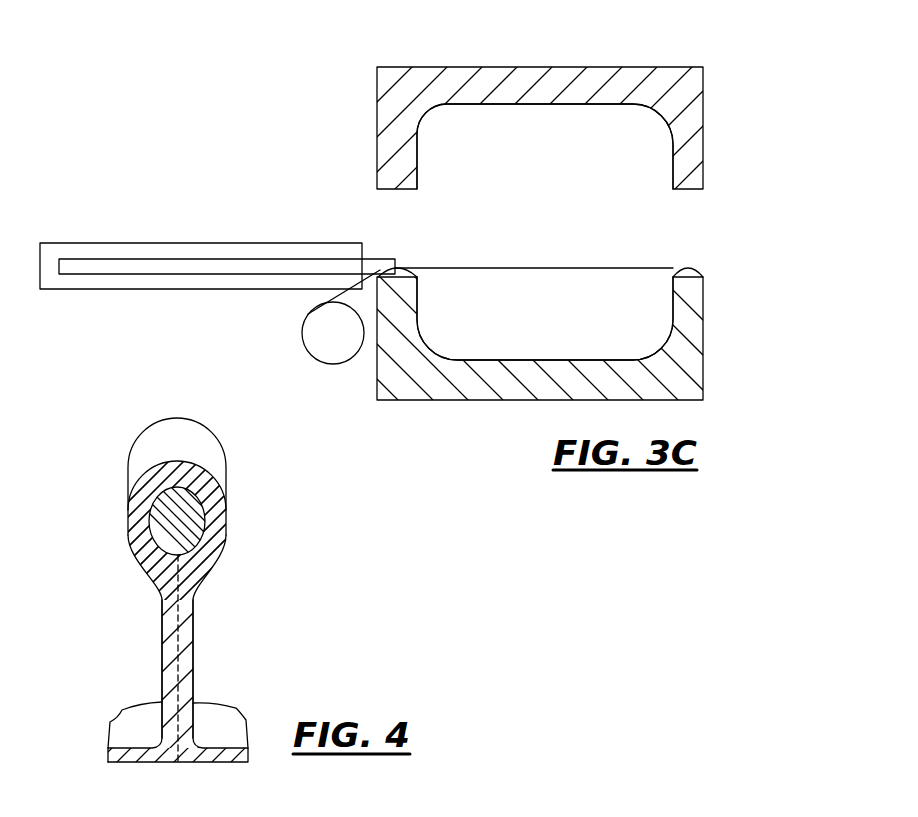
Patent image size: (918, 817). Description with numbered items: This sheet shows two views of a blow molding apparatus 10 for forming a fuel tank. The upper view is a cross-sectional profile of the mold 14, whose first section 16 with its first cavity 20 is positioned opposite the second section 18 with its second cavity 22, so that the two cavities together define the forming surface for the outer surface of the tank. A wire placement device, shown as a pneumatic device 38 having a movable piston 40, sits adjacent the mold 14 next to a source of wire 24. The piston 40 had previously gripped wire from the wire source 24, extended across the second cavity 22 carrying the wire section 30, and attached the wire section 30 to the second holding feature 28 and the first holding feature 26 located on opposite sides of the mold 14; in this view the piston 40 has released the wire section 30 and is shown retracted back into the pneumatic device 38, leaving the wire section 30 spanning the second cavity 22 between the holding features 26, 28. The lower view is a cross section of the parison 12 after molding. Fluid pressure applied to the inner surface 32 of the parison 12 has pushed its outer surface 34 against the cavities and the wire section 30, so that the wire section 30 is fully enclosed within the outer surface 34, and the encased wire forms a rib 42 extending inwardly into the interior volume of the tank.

In FIG. 3C, the blow molding apparatus 10 is at (533, 220).
In FIG. 4, the parison 12 is at (238, 463).
In FIG. 3C, the mold 14 is at (703, 163).
In FIG. 3C, the first section 16 is at (703, 118).
In FIG. 3C, the second section 18 is at (703, 323).
In FIG. 3C, the first cavity 20 is at (560, 116).
In FIG. 3C, the second cavity 22 is at (518, 356).
In FIG. 3C, the source of wire 24 is at (333, 365).
In FIG. 3C, the first holding feature 26 is at (418, 278).
In FIG. 3C, the second holding feature 28 is at (700, 270).
In FIG. 3C, the wire section 30 is at (606, 268).
In FIG. 4, the wire section 30 is at (181, 606).
In FIG. 4, the inner surface 32 is at (194, 670).
In FIG. 4, the outer surface 34 is at (184, 636).
In FIG. 3C, the pneumatic device 38 is at (128, 243).
In FIG. 3C, the movable piston 40 is at (396, 262).
In FIG. 4, the rib 42 is at (228, 529).